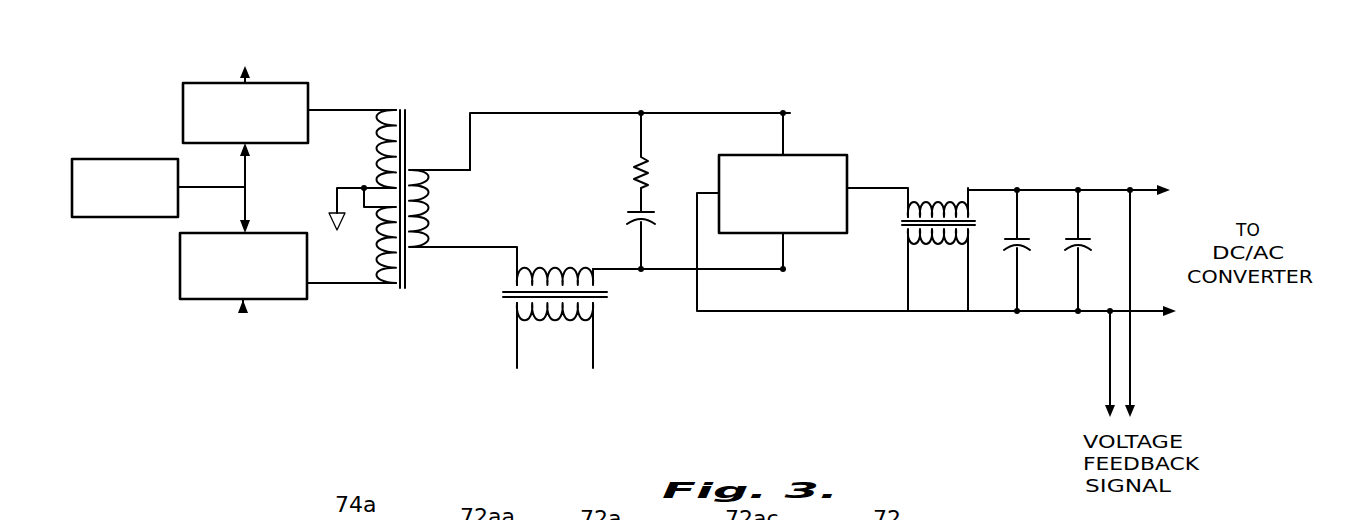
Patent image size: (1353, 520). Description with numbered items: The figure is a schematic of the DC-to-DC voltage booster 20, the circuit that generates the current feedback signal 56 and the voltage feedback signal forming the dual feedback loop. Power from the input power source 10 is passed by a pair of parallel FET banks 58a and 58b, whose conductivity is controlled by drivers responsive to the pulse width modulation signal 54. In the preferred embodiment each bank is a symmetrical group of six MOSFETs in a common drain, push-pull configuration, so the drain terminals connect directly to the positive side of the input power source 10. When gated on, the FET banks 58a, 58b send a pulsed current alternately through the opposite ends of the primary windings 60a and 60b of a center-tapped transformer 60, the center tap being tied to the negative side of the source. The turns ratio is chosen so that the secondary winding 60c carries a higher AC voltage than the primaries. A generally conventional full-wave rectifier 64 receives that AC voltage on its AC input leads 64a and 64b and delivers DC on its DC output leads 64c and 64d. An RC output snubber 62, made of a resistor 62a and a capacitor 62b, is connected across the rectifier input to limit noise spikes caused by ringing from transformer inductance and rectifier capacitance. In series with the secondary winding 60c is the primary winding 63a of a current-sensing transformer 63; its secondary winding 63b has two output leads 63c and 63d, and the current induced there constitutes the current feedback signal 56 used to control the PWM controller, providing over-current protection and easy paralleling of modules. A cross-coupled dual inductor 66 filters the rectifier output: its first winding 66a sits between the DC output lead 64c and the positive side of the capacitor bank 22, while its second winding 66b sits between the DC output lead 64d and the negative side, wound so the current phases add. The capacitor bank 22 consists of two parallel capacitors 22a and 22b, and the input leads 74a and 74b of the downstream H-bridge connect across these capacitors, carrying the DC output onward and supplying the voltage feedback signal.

The input power source 10 is at (92, 159).
The DC-to-DC voltage booster 20 is at (895, 105).
The capacitor bank 22 is at (1105, 235).
The capacitor 22a is at (1024, 232).
The capacitor 22b is at (1077, 253).
The pulse width modulation signal 54 is at (252, 80).
The current feedback signal 56 is at (608, 392).
The FET bank 58a is at (312, 100).
The FET bank 58b is at (180, 283).
The center-tapped transformer 60 is at (406, 113).
The primary winding 60a is at (378, 106).
The primary winding 60b is at (362, 288).
The secondary winding 60c is at (430, 206).
The RC output snubber 62 is at (672, 177).
The resistor 62a is at (646, 177).
The capacitor 62b is at (648, 228).
The current-sensing transformer 63 is at (553, 268).
The primary winding 63a is at (568, 266).
The secondary winding 63b is at (598, 311).
The output lead 63c is at (604, 336).
The output lead 63d is at (505, 336).
The full-wave rectifier 64 is at (850, 160).
The AC input lead 64a is at (788, 140).
The AC input lead 64b is at (787, 253).
The DC output lead 64c is at (940, 197).
The DC output lead 64d is at (786, 313).
The cross-coupled dual inductor 66 is at (945, 198).
The first winding 66a is at (903, 213).
The second winding 66b is at (933, 250).
The input lead 74a is at (1133, 392).
The input lead 74b is at (1108, 368).